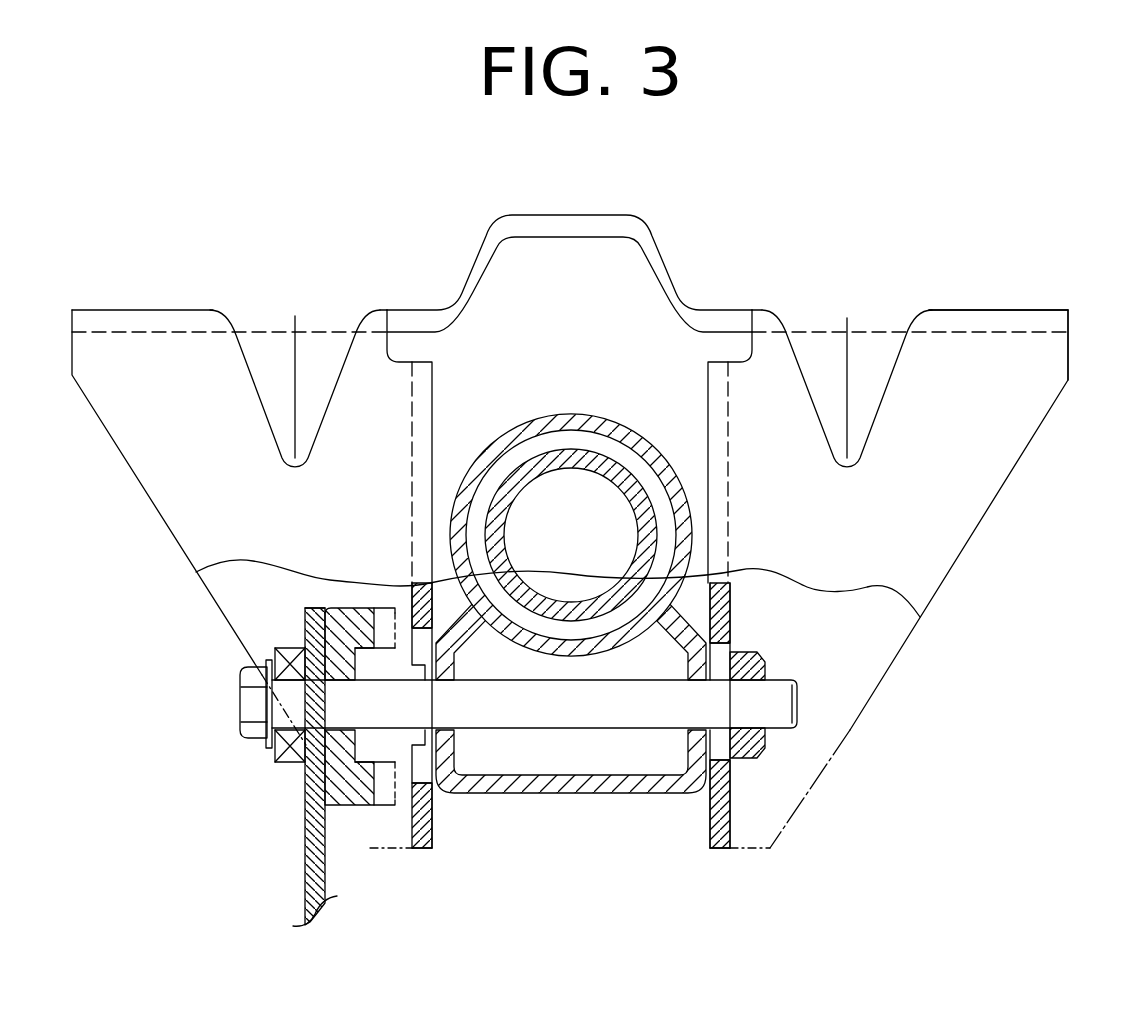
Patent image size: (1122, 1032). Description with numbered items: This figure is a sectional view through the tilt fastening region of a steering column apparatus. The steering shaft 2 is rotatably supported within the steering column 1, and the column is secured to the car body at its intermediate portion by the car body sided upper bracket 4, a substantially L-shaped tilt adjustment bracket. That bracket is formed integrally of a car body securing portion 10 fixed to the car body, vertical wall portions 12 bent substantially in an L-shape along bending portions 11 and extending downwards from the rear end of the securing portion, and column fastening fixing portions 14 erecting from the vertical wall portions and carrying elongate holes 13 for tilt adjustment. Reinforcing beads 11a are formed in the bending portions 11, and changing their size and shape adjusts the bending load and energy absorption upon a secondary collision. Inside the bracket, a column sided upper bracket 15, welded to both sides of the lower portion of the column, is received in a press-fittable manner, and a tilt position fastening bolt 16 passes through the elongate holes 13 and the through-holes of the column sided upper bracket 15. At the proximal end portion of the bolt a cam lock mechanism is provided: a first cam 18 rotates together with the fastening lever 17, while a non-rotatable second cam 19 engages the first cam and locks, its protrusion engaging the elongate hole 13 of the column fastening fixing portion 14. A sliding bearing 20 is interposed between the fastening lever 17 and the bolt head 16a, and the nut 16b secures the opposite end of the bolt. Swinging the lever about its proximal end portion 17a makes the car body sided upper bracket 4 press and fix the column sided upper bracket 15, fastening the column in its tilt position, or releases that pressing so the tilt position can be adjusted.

The steering column 1 is at (637, 432).
The steering shaft 2 is at (562, 449).
The car body sided upper bracket 4 is at (700, 226).
The car body securing portion 10 is at (725, 310).
The bending portions 11 is at (1022, 308).
The reinforcing beads 11a is at (325, 322).
The vertical wall portions 12 is at (953, 530).
The elongate holes 13 is at (427, 773).
The column fastening fixing portions 14 is at (433, 847).
The column sided upper bracket 15 is at (573, 795).
The tilt position fastening bolt 16 is at (518, 717).
The bolt head 16a is at (240, 701).
The nut 16b is at (758, 745).
The fastening lever 17 is at (304, 852).
The proximal end portion 17a is at (303, 612).
The first cam 18 is at (360, 790).
The second cam 19 is at (393, 790).
The sliding bearing 20 is at (262, 738).